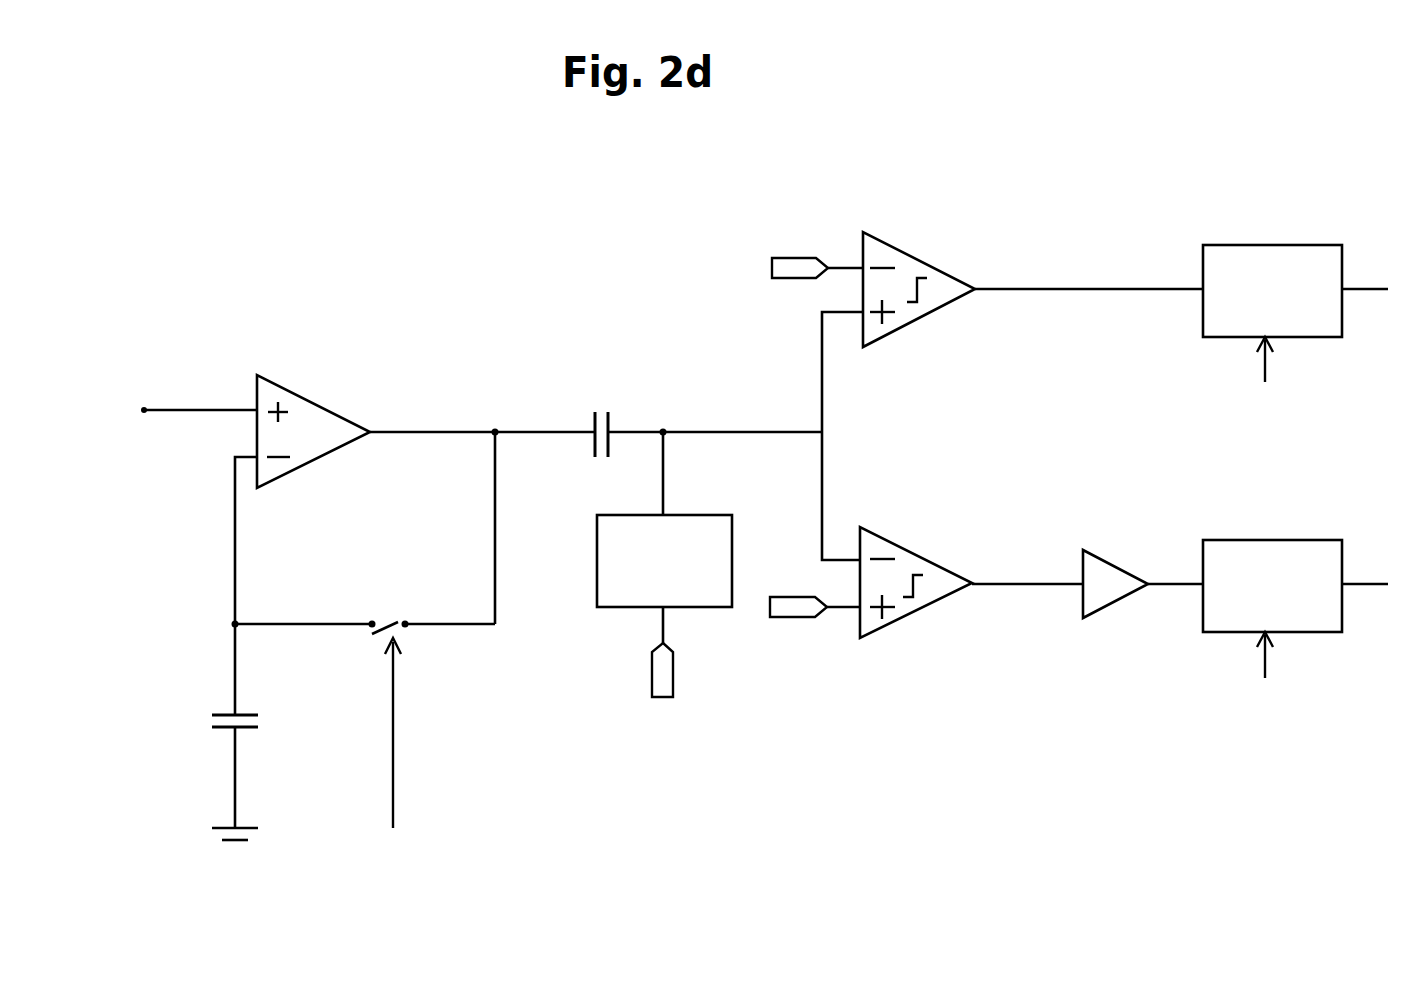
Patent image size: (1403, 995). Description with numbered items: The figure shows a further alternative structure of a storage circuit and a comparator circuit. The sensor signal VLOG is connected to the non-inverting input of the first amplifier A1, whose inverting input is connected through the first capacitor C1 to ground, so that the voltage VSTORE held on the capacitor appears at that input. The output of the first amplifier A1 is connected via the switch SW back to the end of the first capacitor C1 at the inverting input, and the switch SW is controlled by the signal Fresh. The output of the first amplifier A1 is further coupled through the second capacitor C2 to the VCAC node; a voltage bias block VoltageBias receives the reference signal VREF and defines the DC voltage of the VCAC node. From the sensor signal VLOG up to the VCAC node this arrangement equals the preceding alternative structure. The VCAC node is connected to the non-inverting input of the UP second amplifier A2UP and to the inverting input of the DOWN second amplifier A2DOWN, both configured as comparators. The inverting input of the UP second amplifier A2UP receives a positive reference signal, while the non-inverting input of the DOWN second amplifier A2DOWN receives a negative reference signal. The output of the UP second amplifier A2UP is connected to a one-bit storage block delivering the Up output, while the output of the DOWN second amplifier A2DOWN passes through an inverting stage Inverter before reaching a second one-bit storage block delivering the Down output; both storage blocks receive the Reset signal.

The sensor signal VLOG is at (186, 383).
The first amplifier A1 is at (313, 431).
The stored voltage node VSTORE is at (303, 601).
The switch SW is at (428, 607).
The signal Fresh is at (439, 733).
The first capacitor C1 is at (260, 770).
The second capacitor C2 is at (599, 462).
The VCAC node VCAC is at (656, 414).
The voltage bias block VoltageBias is at (664, 519).
The reference signal VREF is at (667, 681).
The UP second amplifier A2UP is at (937, 293).
The DOWN second amplifier A2DOWN is at (942, 577).
The -1 inverting buffer Inverter is at (1143, 584).
The 1 bit storage for Up output Up is at (1367, 288).
The 1 bit storage for Down output Down is at (1360, 585).
The reset signal Reset is at (1265, 526).